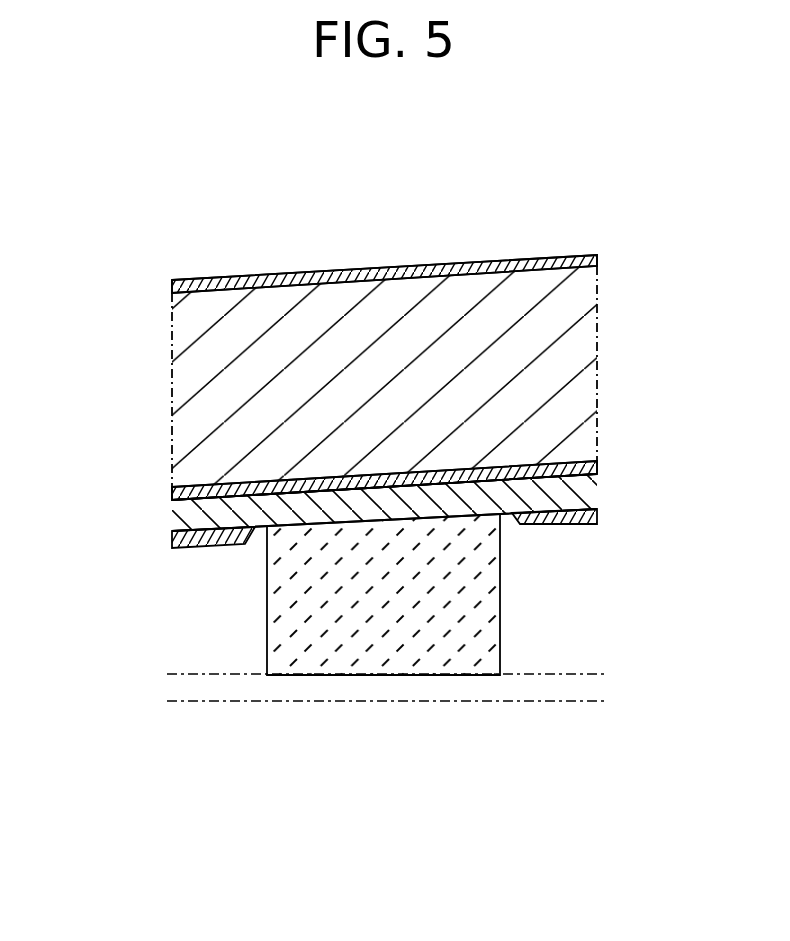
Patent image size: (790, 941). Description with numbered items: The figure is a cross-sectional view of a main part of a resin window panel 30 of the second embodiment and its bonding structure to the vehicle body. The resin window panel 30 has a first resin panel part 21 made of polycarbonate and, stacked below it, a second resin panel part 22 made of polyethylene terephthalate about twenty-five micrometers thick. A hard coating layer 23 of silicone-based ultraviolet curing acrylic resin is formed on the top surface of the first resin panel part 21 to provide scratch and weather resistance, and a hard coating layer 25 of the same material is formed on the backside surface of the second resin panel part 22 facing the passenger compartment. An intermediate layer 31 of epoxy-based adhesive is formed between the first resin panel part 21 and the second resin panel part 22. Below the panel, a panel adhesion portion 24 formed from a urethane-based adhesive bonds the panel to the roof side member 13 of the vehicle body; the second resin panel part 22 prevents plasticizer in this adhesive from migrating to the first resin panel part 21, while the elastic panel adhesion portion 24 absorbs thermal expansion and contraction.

The resin window panel 30 is at (496, 254).
The hard coating layer 23 is at (183, 287).
The first resin panel part 21 is at (232, 391).
The intermediate layer 31 is at (183, 496).
The second resin panel part 22 is at (192, 517).
The hard coating layer 25 is at (182, 543).
The panel adhesion portion 24 is at (265, 606).
The roof side member 13 is at (237, 704).